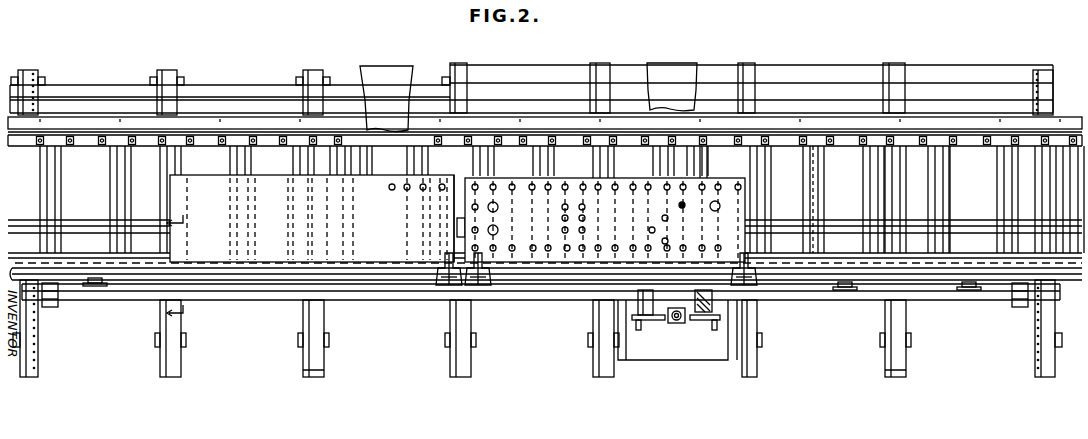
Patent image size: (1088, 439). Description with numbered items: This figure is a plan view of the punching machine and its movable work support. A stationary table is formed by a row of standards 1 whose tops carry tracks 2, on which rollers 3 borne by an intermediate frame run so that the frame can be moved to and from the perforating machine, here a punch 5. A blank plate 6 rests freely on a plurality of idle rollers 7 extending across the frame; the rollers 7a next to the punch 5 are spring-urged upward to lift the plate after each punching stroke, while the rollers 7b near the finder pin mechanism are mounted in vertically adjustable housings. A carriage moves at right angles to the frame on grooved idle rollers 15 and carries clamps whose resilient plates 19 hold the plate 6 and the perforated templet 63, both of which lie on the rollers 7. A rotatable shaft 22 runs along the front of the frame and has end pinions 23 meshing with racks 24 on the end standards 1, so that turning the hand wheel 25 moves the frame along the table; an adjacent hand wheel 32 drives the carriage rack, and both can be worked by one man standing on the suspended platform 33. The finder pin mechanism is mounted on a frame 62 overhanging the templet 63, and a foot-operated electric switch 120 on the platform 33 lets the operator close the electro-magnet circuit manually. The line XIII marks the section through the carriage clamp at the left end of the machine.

The standards 1 is at (303, 343).
The tracks 2 is at (312, 371).
The rollers 3 is at (250, 290).
The punch 5 is at (391, 72).
The plate 6 is at (207, 182).
The idle rollers 7 is at (108, 171).
The blank-supporting rollers 7a is at (406, 166).
The rollers 7b is at (720, 163).
The grooved idle rollers 15 is at (103, 283).
The resilient plate 19 is at (443, 280).
The rotatable shaft 22 is at (534, 298).
The pinions 23 is at (40, 306).
The racks 24 is at (41, 362).
The hand wheel 25 is at (700, 322).
The hand wheel 32 is at (652, 320).
The platform 33 is at (675, 362).
The frame 62 is at (682, 68).
The perforated templet 63 is at (733, 217).
The foot-operated electric switch 120 is at (678, 323).
The section line XIII is at (188, 273).